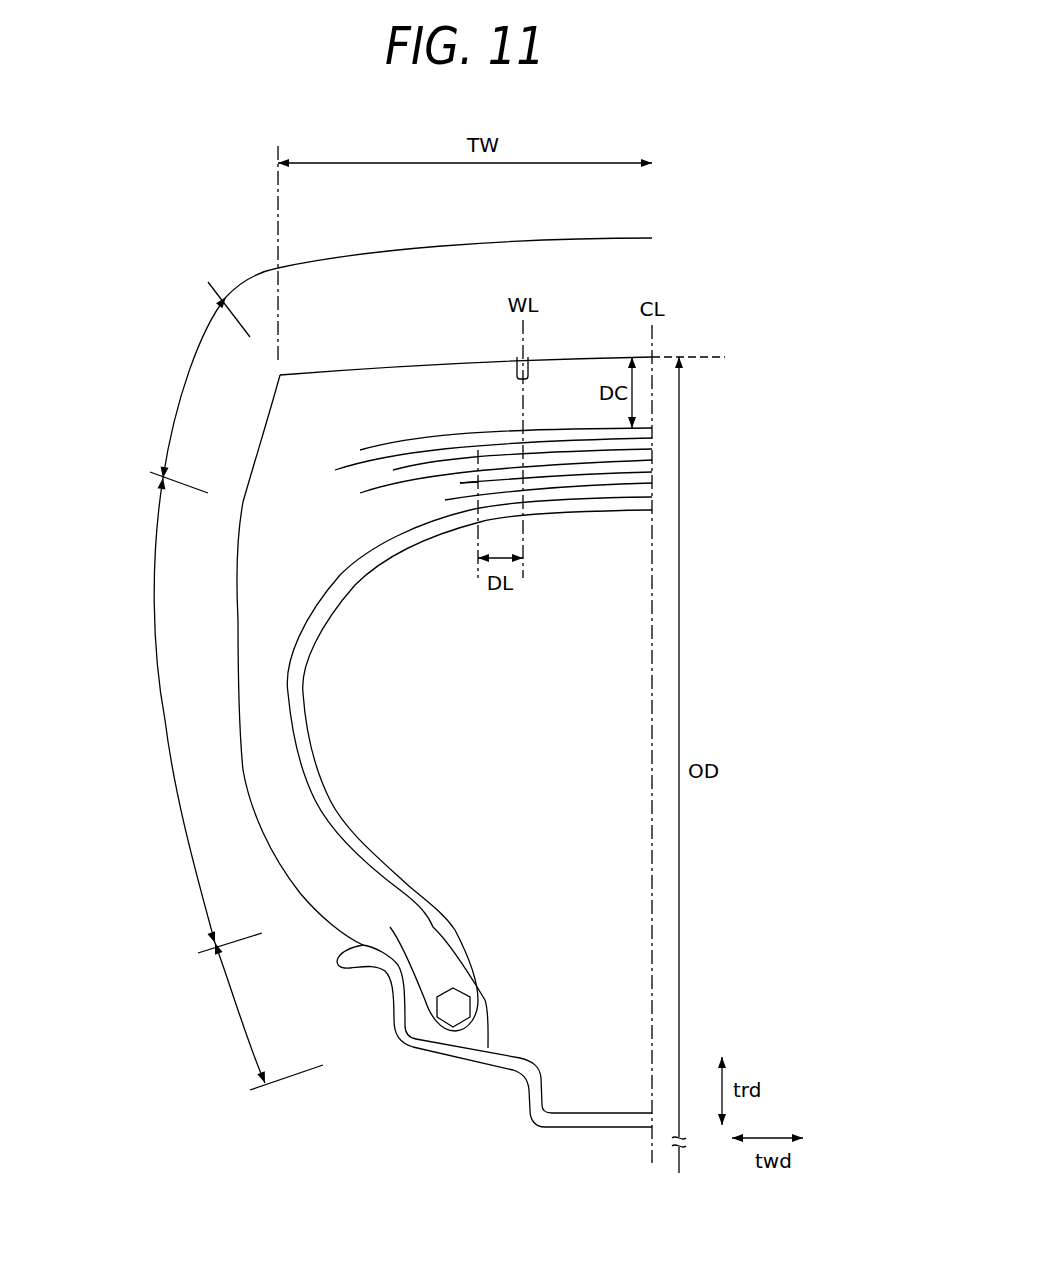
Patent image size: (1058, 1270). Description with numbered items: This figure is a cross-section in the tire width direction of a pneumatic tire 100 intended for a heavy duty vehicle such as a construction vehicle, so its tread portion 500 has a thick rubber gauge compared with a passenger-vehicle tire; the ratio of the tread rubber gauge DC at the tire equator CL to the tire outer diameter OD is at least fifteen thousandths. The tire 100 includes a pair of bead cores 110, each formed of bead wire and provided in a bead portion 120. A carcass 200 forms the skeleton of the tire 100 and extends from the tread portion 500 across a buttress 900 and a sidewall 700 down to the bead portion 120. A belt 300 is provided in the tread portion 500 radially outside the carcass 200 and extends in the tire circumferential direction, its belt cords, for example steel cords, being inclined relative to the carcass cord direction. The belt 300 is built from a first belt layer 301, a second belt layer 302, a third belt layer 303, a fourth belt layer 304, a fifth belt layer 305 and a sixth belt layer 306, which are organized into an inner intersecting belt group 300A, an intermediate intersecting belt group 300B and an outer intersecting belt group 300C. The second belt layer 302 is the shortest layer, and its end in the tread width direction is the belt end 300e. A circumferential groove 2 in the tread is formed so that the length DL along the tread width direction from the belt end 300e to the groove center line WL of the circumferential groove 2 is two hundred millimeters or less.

The tire 100 is at (692, 319).
The bead core 110 is at (458, 1008).
The bead portion 120 is at (238, 1009).
The circumferential groove 2 is at (529, 345).
The carcass 200 is at (357, 853).
The belt 300 is at (797, 392).
The inner intersecting belt group 300A is at (740, 488).
The intermediate intersecting belt group 300B is at (740, 435).
The outer intersecting belt group 300C is at (740, 382).
The belt end 300e is at (460, 483).
The first belt layer 301 is at (652, 483).
The second belt layer 302 is at (652, 472).
The third belt layer 303 is at (652, 460).
The fourth belt layer 304 is at (652, 449).
The fifth belt layer 305 is at (652, 439).
The sixth belt layer 306 is at (652, 428).
The tread portion 500 is at (410, 245).
The sidewall 700 is at (158, 620).
The buttress 900 is at (182, 389).